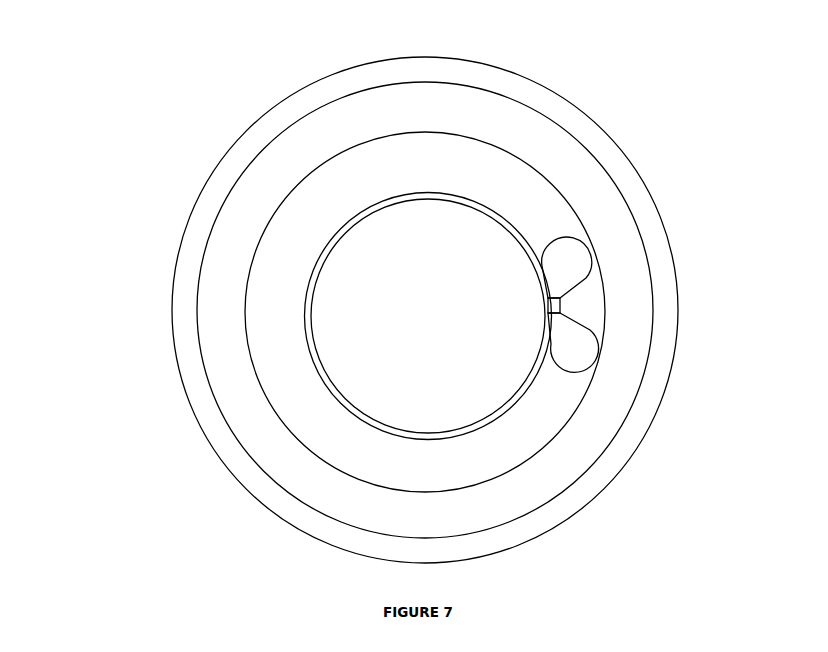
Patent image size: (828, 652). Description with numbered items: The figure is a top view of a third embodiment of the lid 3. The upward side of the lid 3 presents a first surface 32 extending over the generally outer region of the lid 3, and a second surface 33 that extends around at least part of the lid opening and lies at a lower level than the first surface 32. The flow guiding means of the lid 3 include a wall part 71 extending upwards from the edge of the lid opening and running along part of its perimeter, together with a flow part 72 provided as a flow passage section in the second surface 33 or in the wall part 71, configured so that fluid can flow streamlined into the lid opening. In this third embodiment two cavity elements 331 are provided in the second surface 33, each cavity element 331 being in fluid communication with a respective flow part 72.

The lid 3 is at (407, 302).
The first surface 32 is at (210, 292).
The second surface 33 is at (272, 292).
The cavity element 331 is at (575, 232).
The wall part 71 is at (496, 200).
The flow part 72 is at (590, 306).